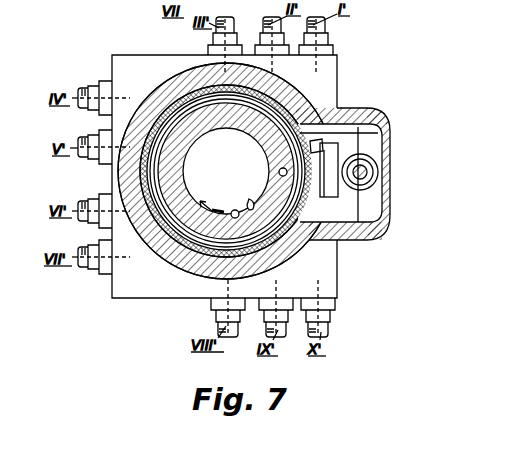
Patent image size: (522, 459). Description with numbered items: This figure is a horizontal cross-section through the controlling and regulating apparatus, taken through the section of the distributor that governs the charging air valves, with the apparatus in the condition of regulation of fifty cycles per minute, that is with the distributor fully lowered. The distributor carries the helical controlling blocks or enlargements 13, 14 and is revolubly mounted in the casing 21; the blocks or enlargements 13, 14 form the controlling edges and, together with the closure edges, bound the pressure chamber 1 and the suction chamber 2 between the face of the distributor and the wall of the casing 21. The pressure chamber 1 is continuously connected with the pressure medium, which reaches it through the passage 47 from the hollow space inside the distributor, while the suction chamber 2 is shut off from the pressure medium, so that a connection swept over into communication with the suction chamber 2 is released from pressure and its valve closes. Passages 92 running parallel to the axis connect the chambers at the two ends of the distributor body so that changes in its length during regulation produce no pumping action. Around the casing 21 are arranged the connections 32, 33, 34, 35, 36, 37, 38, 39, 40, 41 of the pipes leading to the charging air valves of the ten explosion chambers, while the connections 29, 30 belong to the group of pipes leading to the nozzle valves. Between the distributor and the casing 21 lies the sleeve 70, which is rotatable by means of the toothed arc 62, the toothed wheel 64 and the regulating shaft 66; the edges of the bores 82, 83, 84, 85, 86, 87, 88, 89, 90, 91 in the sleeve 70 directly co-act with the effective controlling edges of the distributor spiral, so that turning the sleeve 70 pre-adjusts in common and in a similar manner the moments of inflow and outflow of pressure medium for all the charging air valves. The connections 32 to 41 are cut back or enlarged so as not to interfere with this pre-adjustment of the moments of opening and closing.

The pressure chamber 1 is at (158, 96).
The suction chamber 2 is at (338, 258).
The block or enlargement 13 is at (200, 275).
The block or enlargement 14 is at (280, 90).
The casing 21 is at (324, 70).
The connection 29 is at (186, 14).
The connection 30 is at (276, 3).
The connection 32 is at (330, 53).
The connection 33 is at (271, 62).
The connection 34 is at (226, 56).
The connection 35 is at (108, 86).
The connection 36 is at (110, 161).
The connection 37 is at (110, 224).
The connection 38 is at (110, 271).
The connection 39 is at (233, 312).
The connection 40 is at (276, 296).
The connection 41 is at (322, 290).
The passage 47 is at (236, 210).
The toothed arc 62 is at (330, 150).
The toothed wheel 64 is at (376, 164).
The regulating shaft 66 is at (367, 177).
The sleeve 70 is at (312, 108).
The bore 82 is at (305, 153).
The bore 83 is at (285, 110).
The bore 84 is at (218, 88).
The bore 85 is at (195, 92).
The bore 86 is at (150, 142).
The bore 87 is at (150, 196).
The bore 88 is at (167, 268).
The bore 89 is at (223, 283).
The bore 90 is at (290, 238).
The bore 91 is at (316, 208).
The passage 92 is at (279, 171).